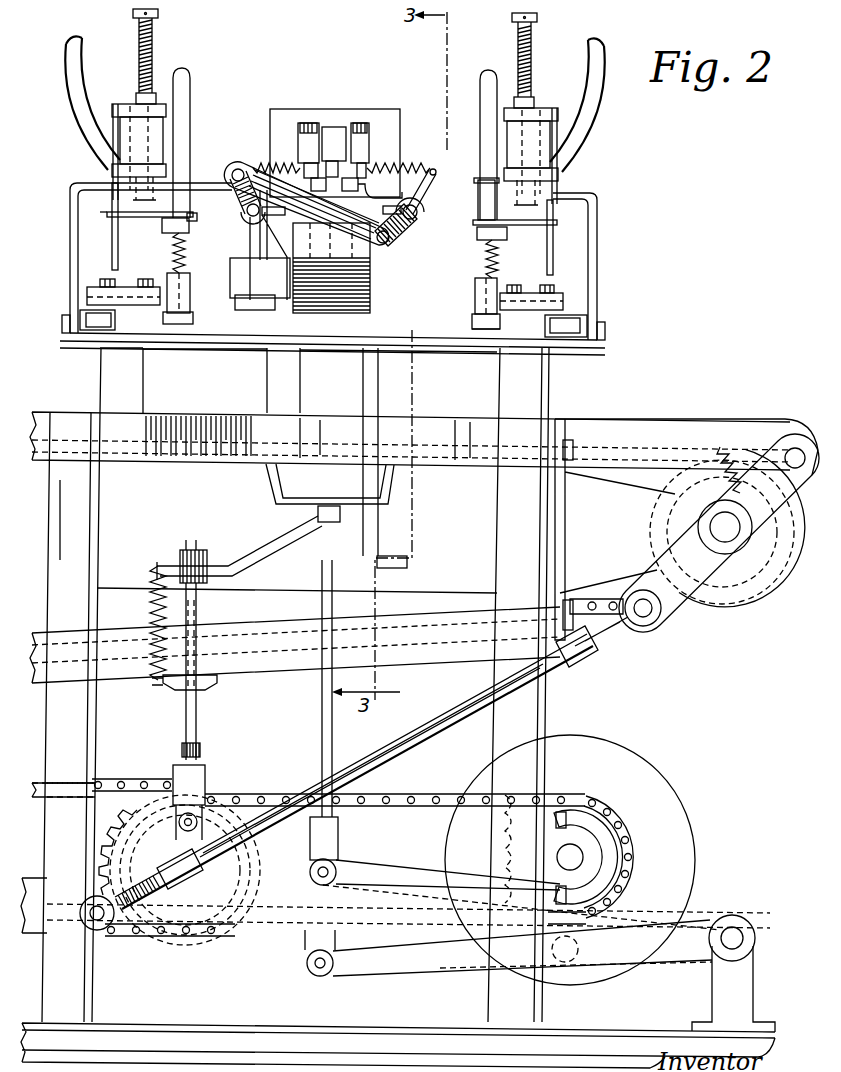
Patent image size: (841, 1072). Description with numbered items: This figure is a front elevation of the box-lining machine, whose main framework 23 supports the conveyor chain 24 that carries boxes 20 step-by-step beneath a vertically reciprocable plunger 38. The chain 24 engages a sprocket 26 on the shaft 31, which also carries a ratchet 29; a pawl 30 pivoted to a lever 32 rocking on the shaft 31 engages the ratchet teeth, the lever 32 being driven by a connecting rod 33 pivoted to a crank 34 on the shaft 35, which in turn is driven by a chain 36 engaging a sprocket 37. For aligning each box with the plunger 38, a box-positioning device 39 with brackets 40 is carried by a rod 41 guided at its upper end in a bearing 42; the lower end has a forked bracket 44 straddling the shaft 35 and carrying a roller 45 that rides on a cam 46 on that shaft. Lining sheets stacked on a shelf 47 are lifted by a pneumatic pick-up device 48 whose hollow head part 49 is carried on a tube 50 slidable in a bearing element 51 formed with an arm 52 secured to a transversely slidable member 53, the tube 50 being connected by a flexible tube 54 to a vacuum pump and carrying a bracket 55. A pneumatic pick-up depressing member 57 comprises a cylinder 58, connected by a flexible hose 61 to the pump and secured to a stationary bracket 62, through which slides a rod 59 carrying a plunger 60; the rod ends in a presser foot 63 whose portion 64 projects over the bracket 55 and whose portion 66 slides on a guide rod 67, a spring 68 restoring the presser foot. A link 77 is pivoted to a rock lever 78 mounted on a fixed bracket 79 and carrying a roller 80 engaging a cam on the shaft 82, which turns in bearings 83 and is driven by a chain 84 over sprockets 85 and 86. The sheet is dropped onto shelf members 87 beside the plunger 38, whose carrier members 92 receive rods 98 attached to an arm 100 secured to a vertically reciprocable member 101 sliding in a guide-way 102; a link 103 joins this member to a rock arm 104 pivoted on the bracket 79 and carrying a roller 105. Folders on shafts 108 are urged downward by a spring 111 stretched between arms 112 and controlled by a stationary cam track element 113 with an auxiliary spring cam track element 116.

The box 20 is at (282, 430).
The main framework 23 is at (83, 528).
The conveyor chain 24 is at (445, 468).
The sprocket 26 is at (667, 513).
The ratchet 29 is at (737, 580).
The pawl 30 is at (735, 437).
The shaft 31 is at (737, 540).
The lever 32 is at (753, 483).
The connecting rod 33 is at (434, 728).
The crank 34 is at (100, 890).
The shaft 35 is at (192, 850).
The chain 36 is at (108, 779).
The sprocket 37 is at (133, 781).
The plunger 38 is at (372, 275).
The box-positioning device 39 is at (331, 522).
The bracket 40 is at (333, 498).
The rod 41 is at (197, 606).
The bearing 42 is at (257, 705).
The forked bracket 44 is at (250, 754).
The roller 45 is at (195, 815).
The cam 46 is at (110, 811).
The shelf 47 is at (250, 342).
The pneumatic pick-up device 48 is at (198, 262).
The hollow head part 49 is at (193, 317).
The tube 50 is at (478, 274).
The bearing element 51 is at (492, 305).
The arm 52 is at (135, 265).
The slidably mounted member 53 is at (88, 310).
The flexible tube 54 is at (187, 134).
The bracket 55 is at (176, 228).
The pneumatic pick-up depressing member 57 is at (162, 91).
The cylinder 58 is at (162, 131).
The rod 59 is at (149, 46).
The plunger 60 is at (133, 108).
The flexible hose 61 is at (70, 90).
The bracket 62 is at (82, 192).
The presser foot 63 is at (146, 217).
The portion 64 is at (474, 210).
The portion 66 is at (107, 212).
The guide rod 67 is at (112, 228).
The spring 68 is at (138, 20).
The link 77 is at (304, 940).
The rock lever 78 is at (437, 965).
The bracket 79 is at (744, 971).
The roller 80 is at (566, 962).
The shaft 82 is at (574, 846).
The bearing 83 is at (592, 852).
The chain 84 is at (425, 788).
The sprocket 85 is at (266, 849).
The sprocket 86 is at (503, 846).
The shelf member 87 is at (183, 340).
The carrier member 92 is at (322, 183).
The rod 98 is at (350, 183).
The arm 100 is at (333, 132).
The vertically reciprocable member 101 is at (308, 127).
The guide-way 102 is at (285, 115).
The link 103 is at (322, 712).
The rock arm 104 is at (417, 869).
The roller 105 is at (640, 886).
The shaft 108 is at (418, 212).
The spring 111 is at (357, 174).
The arm 112 is at (434, 183).
The cam track element 113 is at (253, 167).
The auxiliary cam track element 116 is at (248, 233).